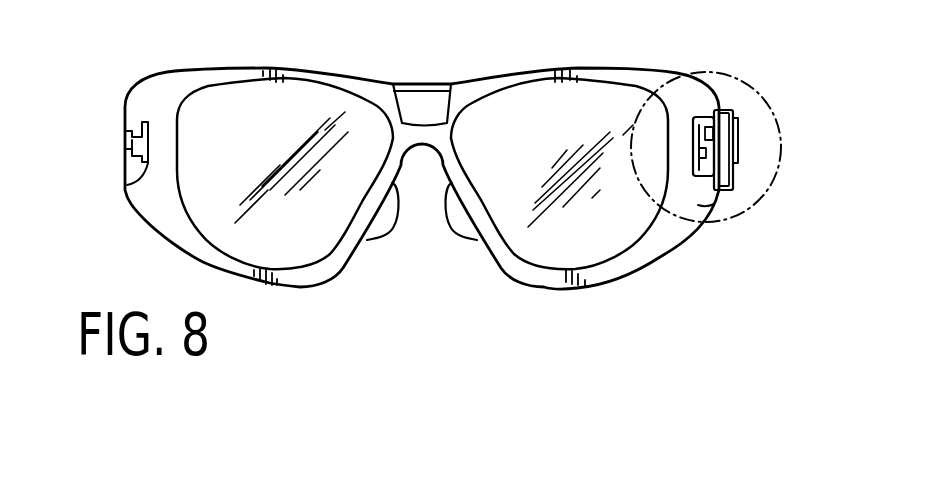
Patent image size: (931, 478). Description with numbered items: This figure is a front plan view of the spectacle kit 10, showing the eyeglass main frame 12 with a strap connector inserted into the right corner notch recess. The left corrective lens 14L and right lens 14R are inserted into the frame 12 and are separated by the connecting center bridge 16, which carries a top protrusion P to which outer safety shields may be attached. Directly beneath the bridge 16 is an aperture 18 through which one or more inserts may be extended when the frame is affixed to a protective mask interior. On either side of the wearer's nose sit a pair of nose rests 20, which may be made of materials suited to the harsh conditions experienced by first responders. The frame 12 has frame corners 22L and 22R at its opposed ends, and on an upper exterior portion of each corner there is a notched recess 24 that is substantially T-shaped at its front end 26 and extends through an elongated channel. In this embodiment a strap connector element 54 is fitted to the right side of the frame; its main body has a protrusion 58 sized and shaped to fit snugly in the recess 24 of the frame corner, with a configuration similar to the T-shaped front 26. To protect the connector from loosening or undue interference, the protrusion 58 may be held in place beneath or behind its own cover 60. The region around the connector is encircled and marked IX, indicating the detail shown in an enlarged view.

The spectacle kit 10 is at (446, 157).
The eyeglass main frame 12 is at (331, 69).
The left corrective lens 14L is at (263, 141).
The right lens 14R is at (559, 173).
The connecting center bridge 16 is at (424, 71).
The aperture 18 is at (413, 107).
The nose rests 20 is at (445, 223).
The left frame corner 22L is at (163, 69).
The right frame corner 22R is at (700, 205).
The notched recess 24 is at (122, 137).
The T-shaped front end 26 is at (127, 185).
The strap connector element 54 is at (742, 166).
The protrusion 58 is at (706, 118).
The cover 60 is at (696, 118).
The top protrusion P is at (434, 86).
The detail view IX region IX is at (723, 72).